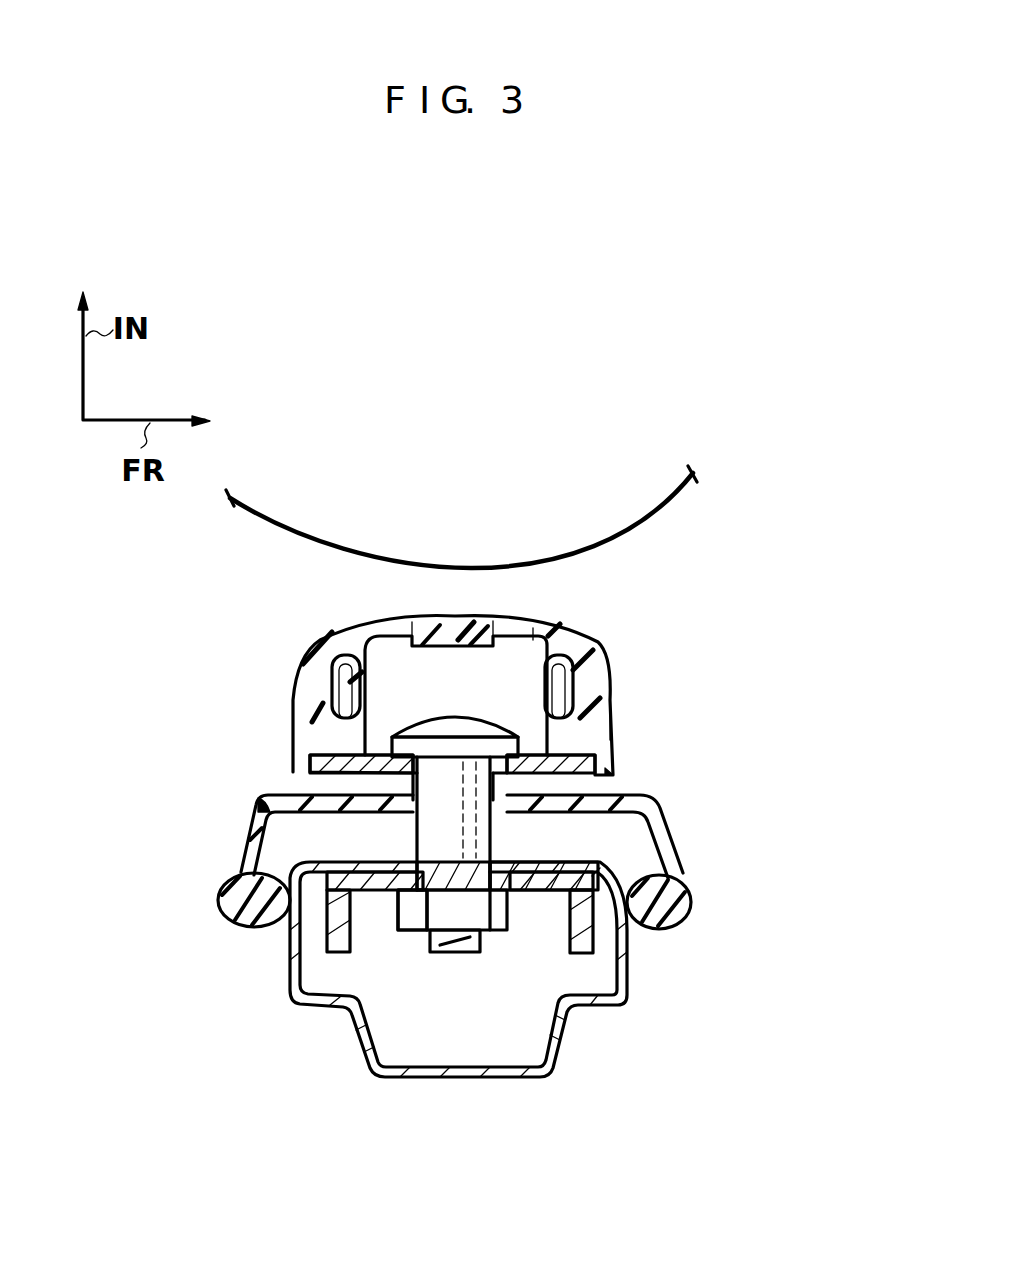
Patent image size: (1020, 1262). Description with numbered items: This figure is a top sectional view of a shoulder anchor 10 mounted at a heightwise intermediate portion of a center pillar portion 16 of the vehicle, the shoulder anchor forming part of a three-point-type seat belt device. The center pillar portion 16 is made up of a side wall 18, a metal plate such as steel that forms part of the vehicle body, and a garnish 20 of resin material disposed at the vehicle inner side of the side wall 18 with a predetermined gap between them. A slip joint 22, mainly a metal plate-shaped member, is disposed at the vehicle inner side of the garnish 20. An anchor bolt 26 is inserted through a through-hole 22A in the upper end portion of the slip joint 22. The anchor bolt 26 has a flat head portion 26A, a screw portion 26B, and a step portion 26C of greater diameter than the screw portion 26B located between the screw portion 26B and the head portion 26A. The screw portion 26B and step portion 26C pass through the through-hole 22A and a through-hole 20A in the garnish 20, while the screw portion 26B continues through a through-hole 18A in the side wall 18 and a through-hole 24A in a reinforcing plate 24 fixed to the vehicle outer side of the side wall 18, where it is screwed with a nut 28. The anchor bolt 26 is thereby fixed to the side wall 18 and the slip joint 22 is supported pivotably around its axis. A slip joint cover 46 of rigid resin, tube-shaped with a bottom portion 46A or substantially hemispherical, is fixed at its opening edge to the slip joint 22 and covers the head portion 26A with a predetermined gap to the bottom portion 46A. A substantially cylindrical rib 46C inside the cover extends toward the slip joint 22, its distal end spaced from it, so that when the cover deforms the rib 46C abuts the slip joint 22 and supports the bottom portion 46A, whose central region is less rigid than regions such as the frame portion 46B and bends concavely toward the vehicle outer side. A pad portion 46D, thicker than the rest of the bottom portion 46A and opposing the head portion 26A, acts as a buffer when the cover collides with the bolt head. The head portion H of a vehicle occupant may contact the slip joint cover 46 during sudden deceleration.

The shoulder anchor 10 is at (710, 658).
The center pillar portion 16 is at (486, 918).
The side wall 18 is at (523, 954).
The through-hole 18A is at (470, 875).
The garnish 20 is at (457, 851).
The through-hole 20A is at (262, 800).
The slip joint 22 is at (355, 748).
The through-hole 22A is at (415, 782).
The reinforcing plate 24 is at (568, 945).
The through-hole 24A is at (400, 930).
The anchor bolt 26 is at (402, 778).
The head portion 26A is at (452, 716).
The screw portion 26B is at (452, 953).
The step portion 26C is at (418, 858).
The nut 28 is at (500, 936).
The slip joint cover 46 is at (450, 656).
The bottom portion 46A is at (557, 633).
The frame portion 46B is at (607, 727).
The rib 46C is at (324, 678).
The pad portion 46D is at (423, 651).
The head portion of the vehicle occupant H is at (652, 524).